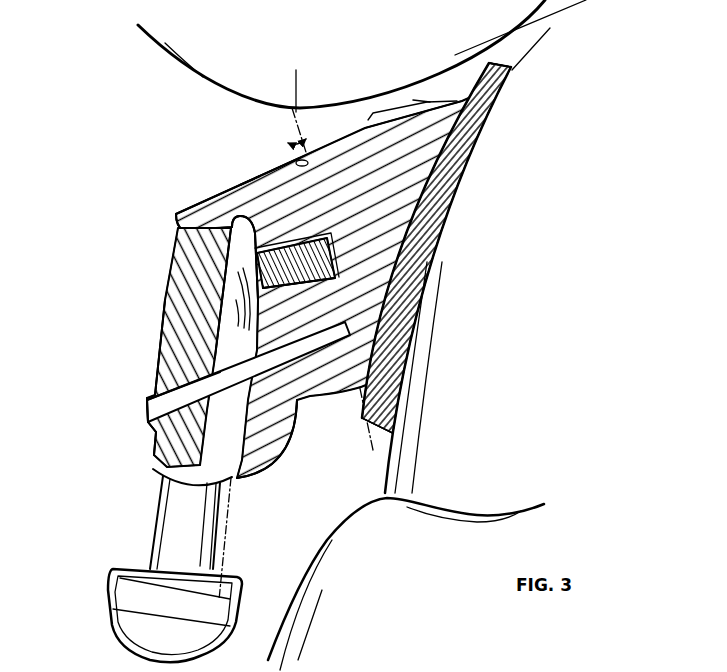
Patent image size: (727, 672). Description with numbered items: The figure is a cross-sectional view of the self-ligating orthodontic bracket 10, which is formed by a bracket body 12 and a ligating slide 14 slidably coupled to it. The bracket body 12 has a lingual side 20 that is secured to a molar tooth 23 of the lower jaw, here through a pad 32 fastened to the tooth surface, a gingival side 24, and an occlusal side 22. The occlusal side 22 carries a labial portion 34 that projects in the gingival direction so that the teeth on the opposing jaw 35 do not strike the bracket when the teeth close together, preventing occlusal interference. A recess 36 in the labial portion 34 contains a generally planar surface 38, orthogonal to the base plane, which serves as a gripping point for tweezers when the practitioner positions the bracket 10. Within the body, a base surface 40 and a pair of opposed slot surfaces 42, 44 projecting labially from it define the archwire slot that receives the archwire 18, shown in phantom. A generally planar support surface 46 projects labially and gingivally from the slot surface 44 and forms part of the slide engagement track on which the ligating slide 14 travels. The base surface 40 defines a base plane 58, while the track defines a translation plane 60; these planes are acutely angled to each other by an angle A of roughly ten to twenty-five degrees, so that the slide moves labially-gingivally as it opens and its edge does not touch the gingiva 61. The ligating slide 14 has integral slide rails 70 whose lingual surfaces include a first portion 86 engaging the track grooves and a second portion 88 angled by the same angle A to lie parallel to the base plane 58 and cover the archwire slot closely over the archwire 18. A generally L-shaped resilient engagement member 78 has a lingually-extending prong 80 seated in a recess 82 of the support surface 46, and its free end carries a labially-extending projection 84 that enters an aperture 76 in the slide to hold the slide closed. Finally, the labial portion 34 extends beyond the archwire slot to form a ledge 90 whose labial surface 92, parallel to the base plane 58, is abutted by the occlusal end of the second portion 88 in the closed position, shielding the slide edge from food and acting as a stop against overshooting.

The orthodontic bracket 10 is at (75, 113).
The bracket body 12 is at (373, 106).
The ligating slide 14 is at (163, 253).
The archwire 18 is at (324, 222).
The lingual side 20 is at (478, 143).
The occlusal side 22 is at (413, 100).
The tooth 23 is at (536, 269).
The gingival side 24 is at (293, 393).
The pad 32 is at (510, 67).
The labial portion 34 is at (190, 205).
The teeth on the opposing jaw 35 is at (348, 29).
The recess 36 is at (308, 163).
The planar surface 38 is at (250, 180).
The base surface 40 is at (334, 252).
The slot surface 42 is at (258, 232).
The slot surface 44 is at (337, 283).
The support surface 46 is at (243, 444).
The base plane 58 is at (303, 104).
The translation plane 60 is at (290, 104).
The gingiva 61 is at (394, 580).
The slide rail 70 is at (213, 470).
The aperture 76 is at (147, 426).
The resilient engagement member 78 is at (220, 357).
The prong 80 is at (283, 323).
The recess 82 is at (281, 352).
The projection 84 is at (190, 406).
The first portion 86 is at (250, 307).
The second portion 88 is at (236, 270).
The ledge 90 is at (180, 226).
The labial surface 92 is at (248, 222).
The angle A is at (304, 141).